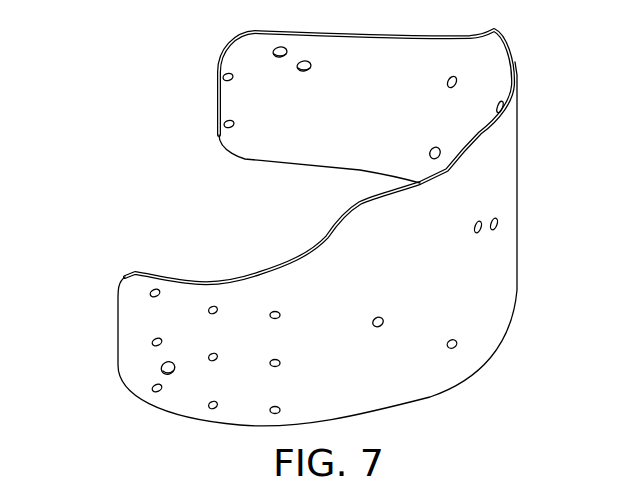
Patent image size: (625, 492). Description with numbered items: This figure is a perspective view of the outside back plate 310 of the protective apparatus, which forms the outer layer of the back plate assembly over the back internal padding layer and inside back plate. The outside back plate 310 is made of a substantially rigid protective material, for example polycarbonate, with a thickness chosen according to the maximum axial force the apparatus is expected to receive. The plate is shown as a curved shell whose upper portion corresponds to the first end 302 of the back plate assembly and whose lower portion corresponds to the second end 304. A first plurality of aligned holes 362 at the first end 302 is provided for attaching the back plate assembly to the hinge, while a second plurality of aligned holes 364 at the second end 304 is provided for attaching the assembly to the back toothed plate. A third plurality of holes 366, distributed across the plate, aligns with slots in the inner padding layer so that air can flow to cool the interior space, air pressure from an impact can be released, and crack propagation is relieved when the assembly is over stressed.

The first end 302 is at (205, 90).
The second end 304 is at (108, 338).
The outside back plate 310 is at (498, 172).
The first plurality of aligned holes 362 is at (227, 128).
The second plurality of aligned holes 364 is at (151, 292).
The third plurality of holes 366 is at (458, 347).